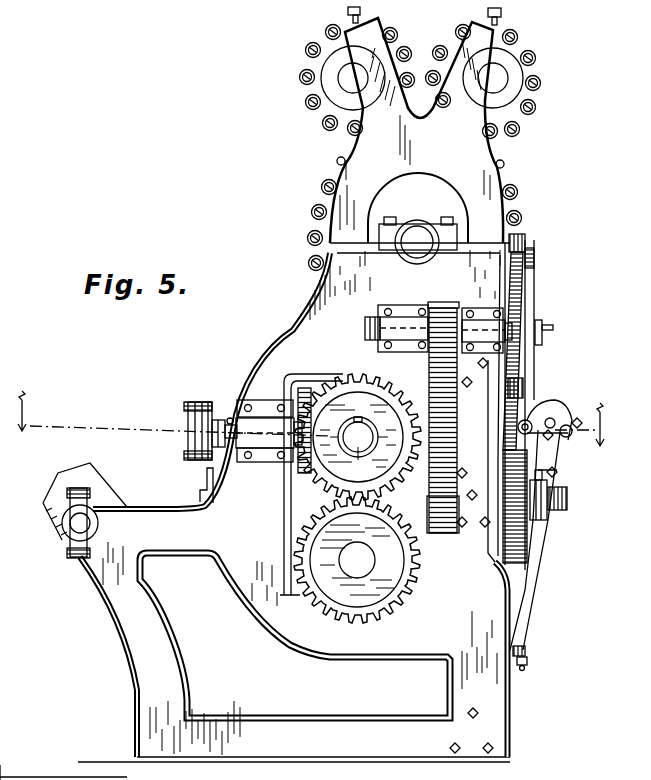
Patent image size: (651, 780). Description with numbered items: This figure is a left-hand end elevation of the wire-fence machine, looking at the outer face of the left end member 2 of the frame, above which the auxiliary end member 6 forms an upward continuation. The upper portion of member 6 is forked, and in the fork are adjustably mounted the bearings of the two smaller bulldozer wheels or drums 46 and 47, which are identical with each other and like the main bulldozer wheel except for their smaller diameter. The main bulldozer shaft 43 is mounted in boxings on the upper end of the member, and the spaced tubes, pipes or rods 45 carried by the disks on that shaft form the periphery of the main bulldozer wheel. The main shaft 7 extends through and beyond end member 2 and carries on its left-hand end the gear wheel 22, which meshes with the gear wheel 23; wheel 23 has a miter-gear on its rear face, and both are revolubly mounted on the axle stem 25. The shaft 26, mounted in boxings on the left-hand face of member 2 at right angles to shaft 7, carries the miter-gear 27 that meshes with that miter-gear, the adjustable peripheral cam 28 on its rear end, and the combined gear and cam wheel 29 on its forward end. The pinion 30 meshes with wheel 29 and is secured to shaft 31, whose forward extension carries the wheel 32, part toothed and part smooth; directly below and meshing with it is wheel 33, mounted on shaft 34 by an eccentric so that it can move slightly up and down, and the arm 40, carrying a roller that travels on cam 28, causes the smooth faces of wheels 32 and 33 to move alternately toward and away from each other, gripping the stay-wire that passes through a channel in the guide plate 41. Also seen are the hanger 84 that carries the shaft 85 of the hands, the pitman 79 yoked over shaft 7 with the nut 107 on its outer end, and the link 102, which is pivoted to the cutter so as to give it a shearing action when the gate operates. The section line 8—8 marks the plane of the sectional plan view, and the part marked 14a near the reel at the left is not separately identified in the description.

The end member 2 is at (276, 502).
The auxiliary end member 6 is at (420, 130).
The main shaft 7 is at (357, 560).
The section line 8— 8 is at (308, 585).
The bracket 14a is at (78, 525).
The gear wheel 22 is at (408, 600).
The gear wheel 23 is at (345, 372).
The axle stem 25 is at (358, 437).
The shaft 26 is at (233, 418).
The miter-gear 27 is at (305, 475).
The adjustable peripheral cam 28 is at (196, 400).
The combined gear and cam wheel 29 is at (434, 534).
The pinion 30 is at (446, 305).
The shaft 31 is at (365, 332).
The wheel 32 is at (527, 236).
The wheel 33 is at (521, 562).
The shaft 34 is at (568, 499).
The arm 40 is at (206, 477).
The guide plate 41 is at (522, 394).
The main bulldozer shaft 43 is at (418, 240).
The tubes, pipes or rods 45 is at (311, 216).
The smaller bulldozer wheel 46 is at (541, 104).
The smaller bulldozer wheel 47 is at (326, 121).
The pitman 79 is at (528, 662).
The hanger 84 is at (568, 460).
The shaft 85 is at (568, 409).
The link 102 is at (536, 420).
The nut 107 is at (527, 647).